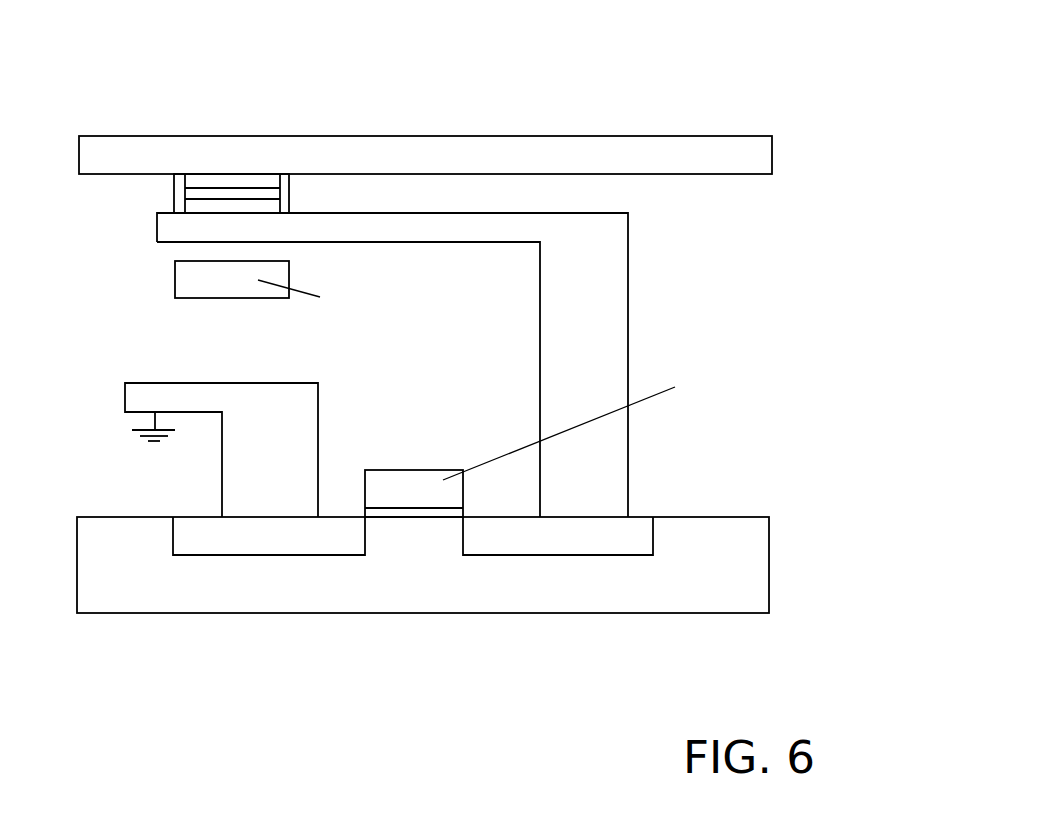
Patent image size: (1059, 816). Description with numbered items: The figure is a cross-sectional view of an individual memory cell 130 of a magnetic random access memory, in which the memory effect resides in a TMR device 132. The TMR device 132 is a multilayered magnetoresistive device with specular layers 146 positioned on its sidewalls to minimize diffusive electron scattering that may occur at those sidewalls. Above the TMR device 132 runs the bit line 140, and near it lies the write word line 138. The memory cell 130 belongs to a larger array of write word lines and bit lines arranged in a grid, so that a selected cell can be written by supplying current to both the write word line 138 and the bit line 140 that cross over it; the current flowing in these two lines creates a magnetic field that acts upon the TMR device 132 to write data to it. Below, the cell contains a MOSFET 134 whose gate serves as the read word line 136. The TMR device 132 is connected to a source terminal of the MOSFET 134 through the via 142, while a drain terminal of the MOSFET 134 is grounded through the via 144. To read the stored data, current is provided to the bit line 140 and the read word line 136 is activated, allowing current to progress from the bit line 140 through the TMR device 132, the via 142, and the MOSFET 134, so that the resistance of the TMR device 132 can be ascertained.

The memory cell 130 is at (462, 351).
The TMR device 132 is at (158, 172).
The MOSFET 134 is at (487, 601).
The read word line 136 is at (415, 482).
The write word line 138 is at (197, 290).
The bit line 140 is at (688, 171).
The via 142 is at (599, 302).
The via 144 is at (290, 462).
The specular layers 146 is at (284, 184).